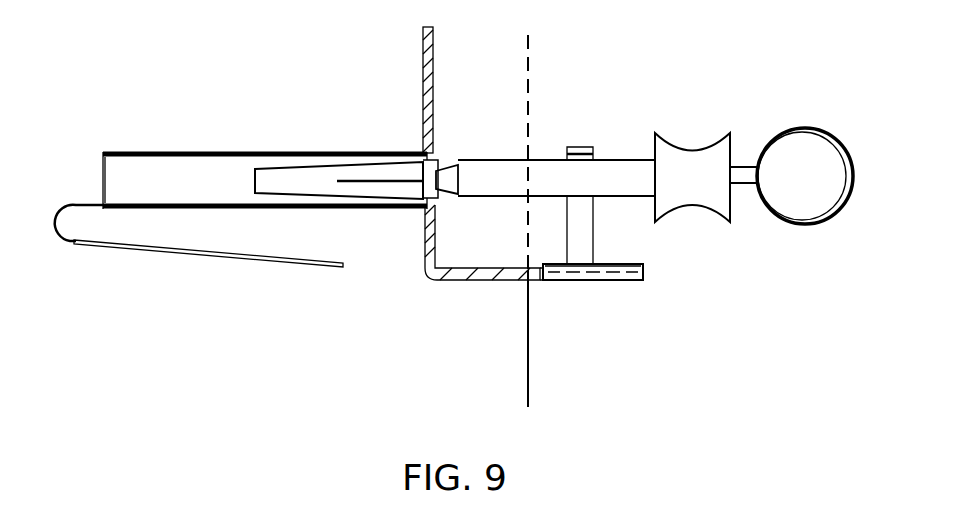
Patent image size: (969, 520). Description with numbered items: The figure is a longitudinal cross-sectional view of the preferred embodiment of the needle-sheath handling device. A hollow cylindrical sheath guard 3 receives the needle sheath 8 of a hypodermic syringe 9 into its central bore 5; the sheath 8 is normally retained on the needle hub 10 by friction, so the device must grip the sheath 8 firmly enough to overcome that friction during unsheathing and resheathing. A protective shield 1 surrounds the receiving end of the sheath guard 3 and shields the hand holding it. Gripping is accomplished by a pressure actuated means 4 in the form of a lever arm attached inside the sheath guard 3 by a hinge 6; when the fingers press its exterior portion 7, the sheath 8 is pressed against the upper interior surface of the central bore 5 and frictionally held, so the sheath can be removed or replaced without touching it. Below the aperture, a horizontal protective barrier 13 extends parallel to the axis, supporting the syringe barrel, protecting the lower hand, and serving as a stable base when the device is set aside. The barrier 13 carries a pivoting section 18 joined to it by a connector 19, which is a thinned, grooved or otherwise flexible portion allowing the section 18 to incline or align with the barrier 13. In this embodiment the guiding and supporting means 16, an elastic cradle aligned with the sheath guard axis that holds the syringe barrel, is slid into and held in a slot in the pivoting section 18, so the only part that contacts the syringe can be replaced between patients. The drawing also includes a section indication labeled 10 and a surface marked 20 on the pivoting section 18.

The protective shield 1 is at (423, 45).
The hollow cylindrical sheath guard 3 is at (283, 150).
The pressure actuated means of engaging the sheath 4 is at (75, 250).
The central bore 5 is at (128, 185).
The hinge 6 is at (422, 210).
The exterior portion 7 is at (203, 256).
The needle sheath 8 is at (441, 148).
The hypodermic syringe 9 is at (616, 152).
The needle hub 10 is at (526, 60).
The horizontal protective barrier 13 is at (470, 282).
The guiding and supporting means 16 is at (576, 150).
The pivoting section 18 is at (617, 280).
The connector 19 is at (540, 282).
The plate surface 20 is at (627, 262).